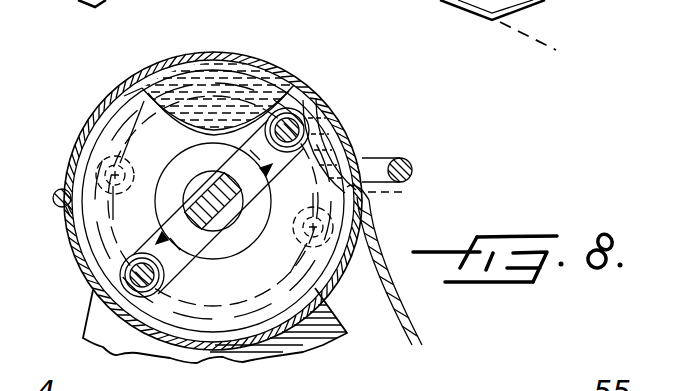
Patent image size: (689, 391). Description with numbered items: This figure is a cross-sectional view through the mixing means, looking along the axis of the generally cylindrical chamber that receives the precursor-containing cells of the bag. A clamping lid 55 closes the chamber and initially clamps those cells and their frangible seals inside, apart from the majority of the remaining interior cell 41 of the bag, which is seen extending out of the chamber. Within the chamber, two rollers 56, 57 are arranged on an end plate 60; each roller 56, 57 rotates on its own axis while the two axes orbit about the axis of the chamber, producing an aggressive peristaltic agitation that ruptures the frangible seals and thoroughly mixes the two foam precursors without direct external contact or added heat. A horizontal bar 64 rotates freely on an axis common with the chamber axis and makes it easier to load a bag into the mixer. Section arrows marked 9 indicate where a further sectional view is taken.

The section line 9- 9 is at (170, 160).
The clamping lid 55 is at (302, 55).
The roller 57 is at (306, 108).
The roller 56 is at (127, 277).
The end plate 60 is at (197, 295).
The horizontal bar 64 is at (203, 243).
The interior cell 41 is at (398, 312).